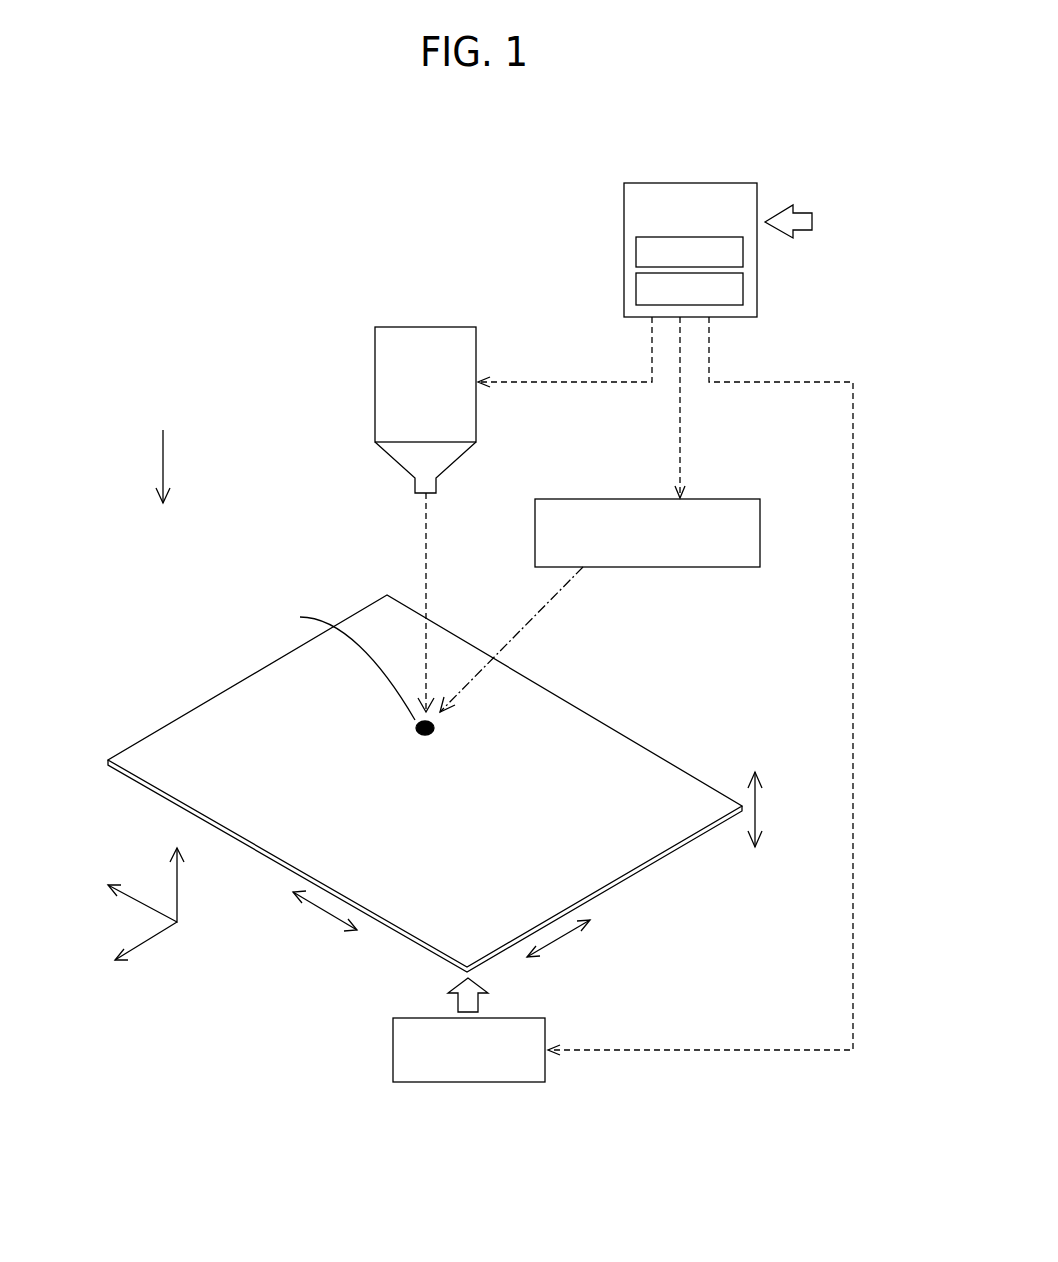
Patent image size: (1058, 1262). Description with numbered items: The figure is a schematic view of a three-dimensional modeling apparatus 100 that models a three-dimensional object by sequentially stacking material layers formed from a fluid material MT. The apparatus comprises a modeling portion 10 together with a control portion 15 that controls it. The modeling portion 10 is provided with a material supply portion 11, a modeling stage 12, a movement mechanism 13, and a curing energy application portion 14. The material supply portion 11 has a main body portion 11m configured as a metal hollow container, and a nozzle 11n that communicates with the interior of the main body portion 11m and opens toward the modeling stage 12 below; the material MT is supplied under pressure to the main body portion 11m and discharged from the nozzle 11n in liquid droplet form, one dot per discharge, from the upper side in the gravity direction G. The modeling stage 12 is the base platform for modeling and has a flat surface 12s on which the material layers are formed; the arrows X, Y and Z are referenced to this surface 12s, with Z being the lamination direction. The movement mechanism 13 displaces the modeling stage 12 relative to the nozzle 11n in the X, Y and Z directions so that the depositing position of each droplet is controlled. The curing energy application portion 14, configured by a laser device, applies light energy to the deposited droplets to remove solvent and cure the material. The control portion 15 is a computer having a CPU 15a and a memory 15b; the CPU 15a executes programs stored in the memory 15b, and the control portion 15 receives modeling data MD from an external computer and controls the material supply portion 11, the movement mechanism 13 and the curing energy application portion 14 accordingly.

The three-dimensional modeling apparatus 100 is at (163, 195).
The modeling portion 10 is at (350, 272).
The material supply portion 11 is at (462, 395).
The main body portion 11m is at (476, 345).
The nozzle 11n is at (428, 495).
The modeling stage 12 is at (421, 783).
The surface 12s is at (205, 700).
The movement mechanism 13 is at (515, 1018).
The curing energy application portion 14 is at (705, 499).
The control portion 15 is at (729, 230).
The CPU 15a is at (743, 252).
The memory 15b is at (743, 285).